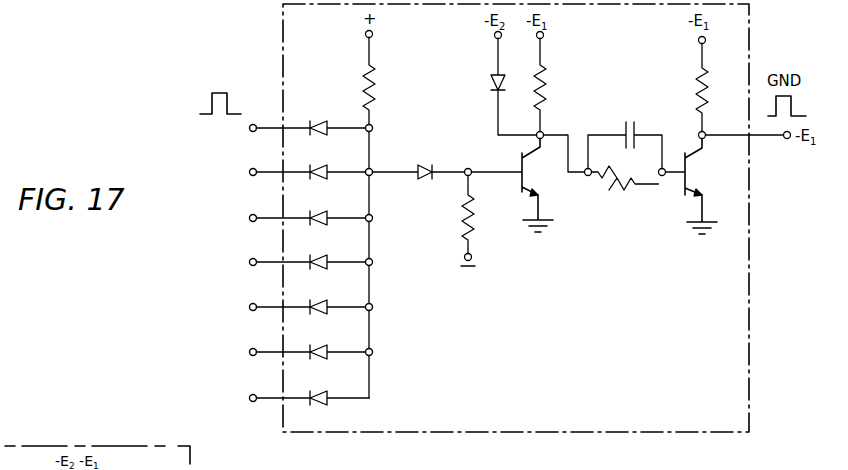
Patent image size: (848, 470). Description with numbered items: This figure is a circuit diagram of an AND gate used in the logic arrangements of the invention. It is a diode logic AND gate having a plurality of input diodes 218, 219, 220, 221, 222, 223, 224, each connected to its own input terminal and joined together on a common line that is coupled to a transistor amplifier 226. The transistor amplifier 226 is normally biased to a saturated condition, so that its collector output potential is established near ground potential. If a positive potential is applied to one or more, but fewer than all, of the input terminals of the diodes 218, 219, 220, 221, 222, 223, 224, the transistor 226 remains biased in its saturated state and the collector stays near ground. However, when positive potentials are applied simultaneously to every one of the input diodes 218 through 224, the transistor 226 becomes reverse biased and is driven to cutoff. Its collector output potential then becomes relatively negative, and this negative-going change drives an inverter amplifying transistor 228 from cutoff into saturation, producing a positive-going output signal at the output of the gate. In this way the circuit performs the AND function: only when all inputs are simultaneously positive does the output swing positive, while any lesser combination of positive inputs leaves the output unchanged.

The input diode 218 is at (341, 125).
The input diode 219 is at (350, 171).
The input diode 220 is at (350, 217).
The input diode 221 is at (350, 261).
The input diode 222 is at (350, 306).
The input diode 223 is at (350, 351).
The input diode 224 is at (350, 397).
The transistor amplifier 226 is at (520, 195).
The inverter amplifying transistor 228 is at (686, 194).